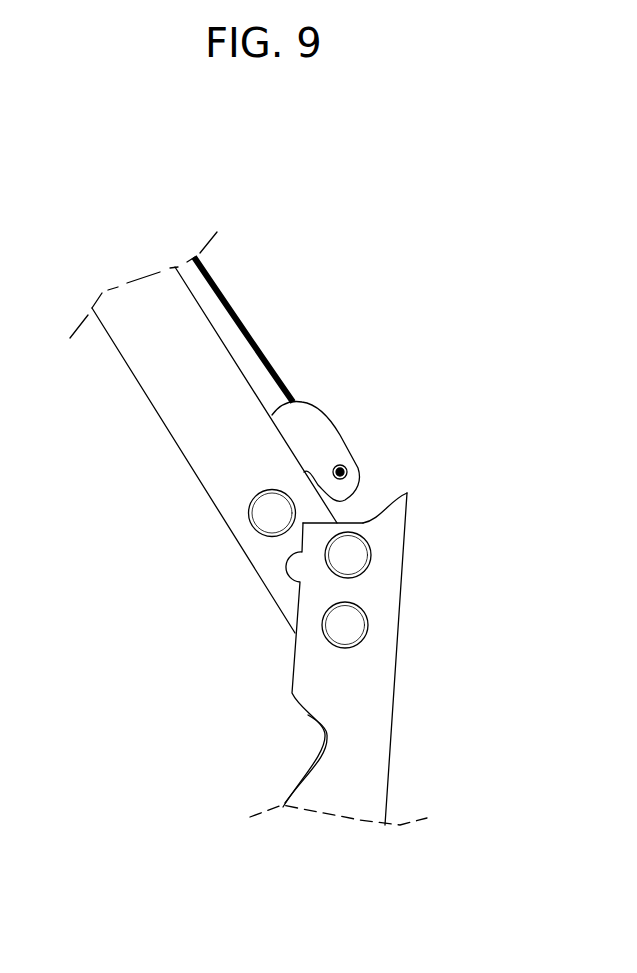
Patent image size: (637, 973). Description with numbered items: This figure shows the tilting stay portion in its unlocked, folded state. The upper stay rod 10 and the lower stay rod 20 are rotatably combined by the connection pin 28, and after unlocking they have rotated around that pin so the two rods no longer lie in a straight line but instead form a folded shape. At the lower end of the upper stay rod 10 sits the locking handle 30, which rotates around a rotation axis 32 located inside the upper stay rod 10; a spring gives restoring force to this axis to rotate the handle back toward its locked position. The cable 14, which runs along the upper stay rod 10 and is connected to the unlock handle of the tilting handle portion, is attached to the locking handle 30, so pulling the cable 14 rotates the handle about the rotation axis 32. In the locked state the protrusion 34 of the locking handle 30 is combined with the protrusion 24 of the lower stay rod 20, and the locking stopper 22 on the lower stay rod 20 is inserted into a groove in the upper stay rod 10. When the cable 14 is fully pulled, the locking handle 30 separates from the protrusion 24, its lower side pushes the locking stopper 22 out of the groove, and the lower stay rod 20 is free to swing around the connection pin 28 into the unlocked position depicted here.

The upper stay rod 10 is at (160, 375).
The cable 14 is at (232, 312).
The locking handle 30 is at (323, 402).
The protrusion 34 is at (340, 488).
The rotation axis 32 is at (270, 513).
The lower stay rod 20 is at (365, 713).
The protrusion 24 is at (398, 507).
The locking stopper 22 is at (358, 555).
The connection pin 28 is at (348, 625).